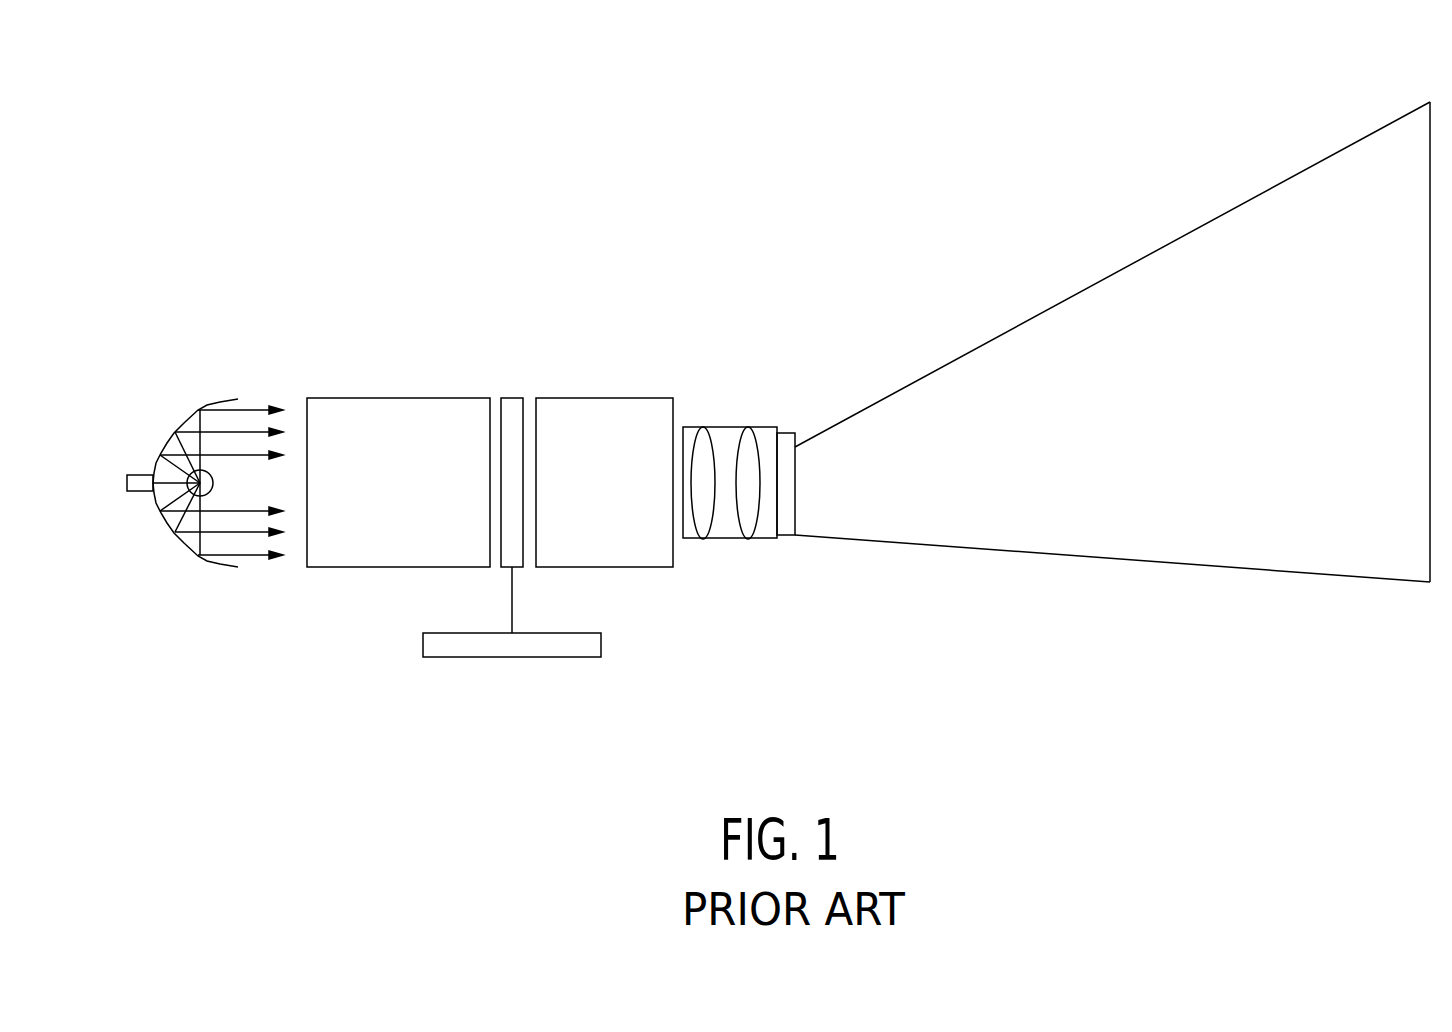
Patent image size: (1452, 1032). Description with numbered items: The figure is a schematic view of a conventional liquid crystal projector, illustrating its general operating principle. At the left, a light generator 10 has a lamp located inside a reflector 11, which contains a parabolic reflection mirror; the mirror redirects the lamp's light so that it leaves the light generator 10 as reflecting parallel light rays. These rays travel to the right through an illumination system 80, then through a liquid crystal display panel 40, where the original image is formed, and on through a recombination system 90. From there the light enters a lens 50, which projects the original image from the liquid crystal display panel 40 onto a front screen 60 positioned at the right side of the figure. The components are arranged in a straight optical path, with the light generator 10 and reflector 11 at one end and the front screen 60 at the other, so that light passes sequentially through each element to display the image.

The light generator 10 is at (228, 460).
The reflector 11 is at (185, 418).
The illumination system 80 is at (378, 417).
The liquid crystal display panel 40 is at (510, 412).
The recombination system 90 is at (615, 417).
The lens 50 is at (722, 442).
The front screen 60 is at (1430, 198).